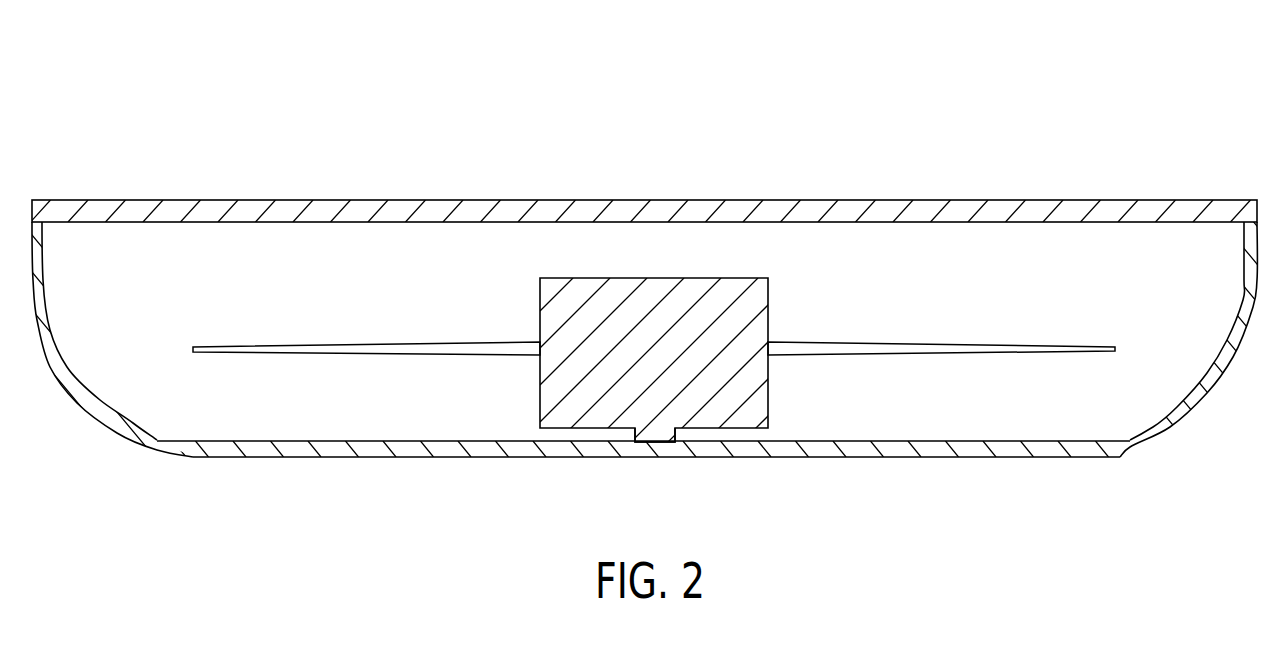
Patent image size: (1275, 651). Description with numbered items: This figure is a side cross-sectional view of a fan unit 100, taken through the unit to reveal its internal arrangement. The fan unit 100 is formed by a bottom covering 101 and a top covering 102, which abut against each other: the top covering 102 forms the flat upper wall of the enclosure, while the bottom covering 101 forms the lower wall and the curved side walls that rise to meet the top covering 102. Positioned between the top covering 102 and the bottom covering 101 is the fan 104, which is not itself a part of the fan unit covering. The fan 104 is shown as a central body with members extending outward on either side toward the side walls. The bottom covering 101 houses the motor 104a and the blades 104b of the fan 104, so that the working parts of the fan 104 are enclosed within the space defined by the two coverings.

The fan unit 100 is at (309, 103).
The bottom covering 101 is at (845, 456).
The top covering 102 is at (785, 208).
The fan 104 is at (603, 277).
The motor 104a is at (390, 355).
The blades 104b is at (597, 430).